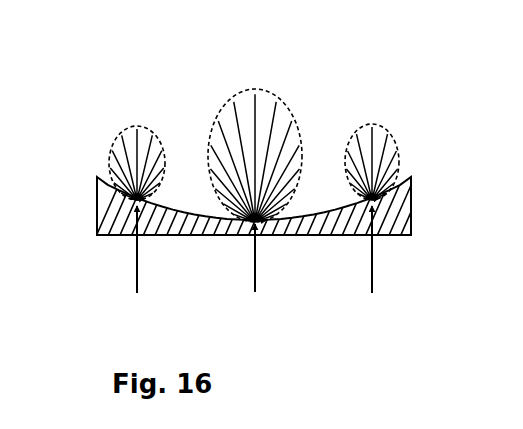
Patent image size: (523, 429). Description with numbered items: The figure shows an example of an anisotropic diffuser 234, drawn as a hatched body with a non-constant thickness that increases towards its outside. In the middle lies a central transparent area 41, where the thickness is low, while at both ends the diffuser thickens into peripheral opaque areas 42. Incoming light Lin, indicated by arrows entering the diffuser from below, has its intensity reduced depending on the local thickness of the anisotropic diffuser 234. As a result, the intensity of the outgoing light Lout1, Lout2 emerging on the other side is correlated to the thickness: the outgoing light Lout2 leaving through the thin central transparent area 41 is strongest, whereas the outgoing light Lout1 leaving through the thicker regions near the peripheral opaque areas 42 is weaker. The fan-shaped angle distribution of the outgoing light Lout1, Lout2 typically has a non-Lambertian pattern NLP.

The central transparent area 41 is at (288, 228).
The peripheral opaque areas 42 is at (107, 225).
The anisotropic diffuser 234 is at (401, 241).
The incoming light Lin is at (370, 252).
The outgoing light Lout1 is at (133, 118).
The outgoing light Lout2 is at (210, 135).
The non-Lambertian pattern NLP is at (175, 96).